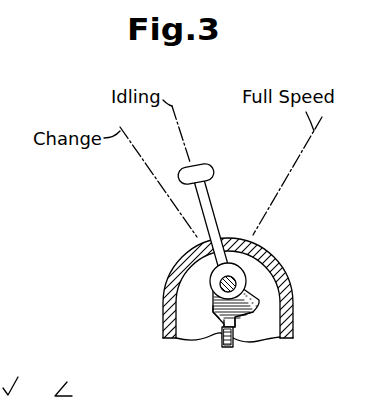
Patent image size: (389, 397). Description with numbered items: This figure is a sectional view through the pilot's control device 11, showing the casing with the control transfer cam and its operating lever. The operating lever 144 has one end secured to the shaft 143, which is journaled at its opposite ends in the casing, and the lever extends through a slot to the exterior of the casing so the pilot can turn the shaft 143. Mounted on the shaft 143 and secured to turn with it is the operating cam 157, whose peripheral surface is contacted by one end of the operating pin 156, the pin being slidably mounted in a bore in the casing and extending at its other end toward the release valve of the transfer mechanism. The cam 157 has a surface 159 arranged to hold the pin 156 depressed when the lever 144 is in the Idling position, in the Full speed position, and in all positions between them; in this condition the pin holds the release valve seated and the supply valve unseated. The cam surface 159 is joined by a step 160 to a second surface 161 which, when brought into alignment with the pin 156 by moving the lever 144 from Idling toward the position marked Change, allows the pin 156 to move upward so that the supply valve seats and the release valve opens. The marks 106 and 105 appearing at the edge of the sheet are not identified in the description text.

The housing 11 is at (190, 251).
The control lever with knob 144 is at (205, 167).
The pivot pin 143 is at (222, 285).
The cam plate 157 is at (242, 290).
The cam lower-left edge 161 is at (213, 313).
The cam lower-right edge 159 is at (253, 314).
The cam stem 160 is at (222, 320).
The switch block 156 is at (234, 345).
The line reference 106 is at (22, 384).
The line reference 105 is at (73, 389).